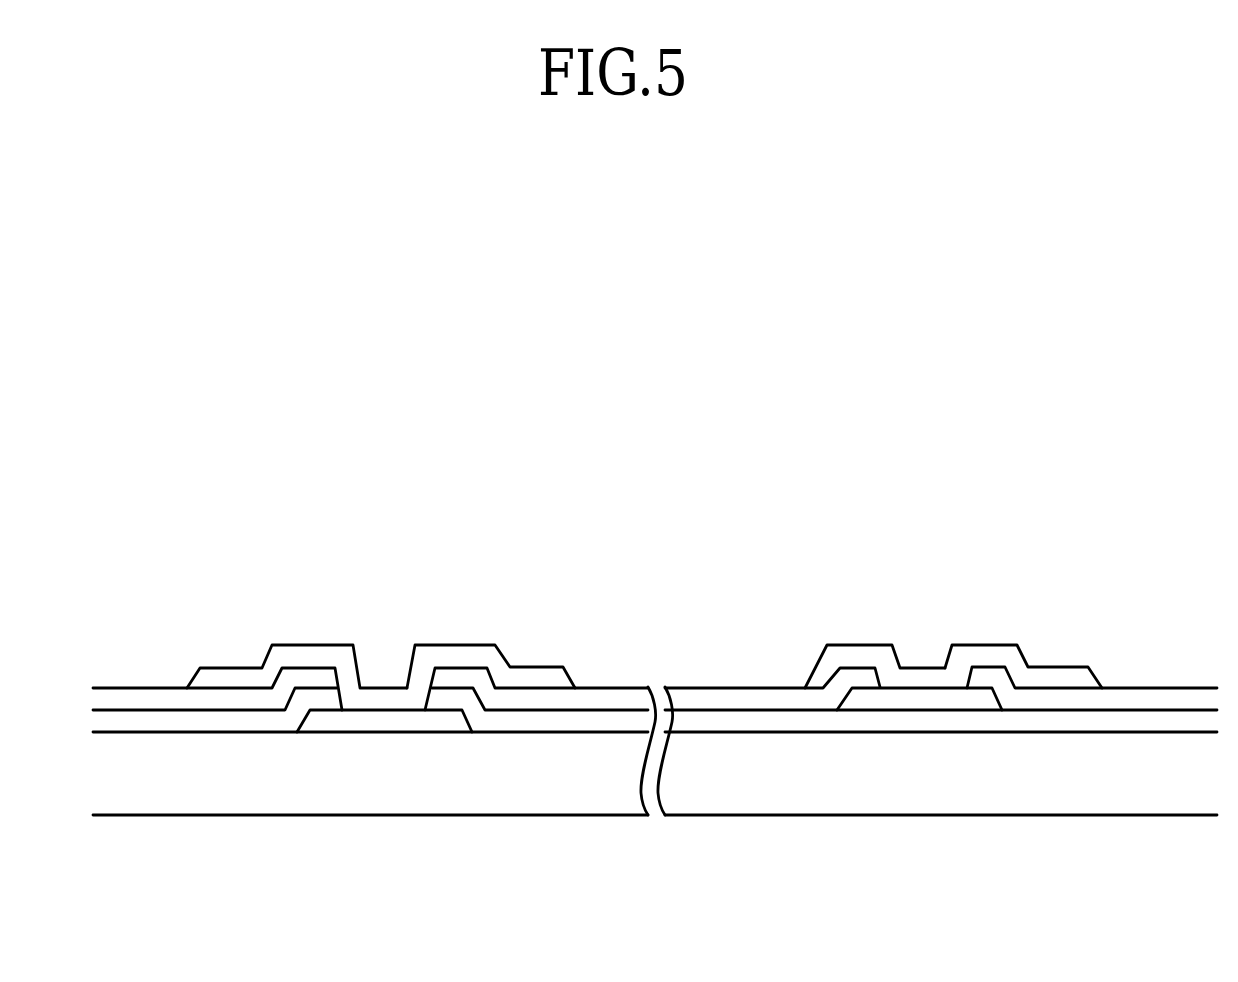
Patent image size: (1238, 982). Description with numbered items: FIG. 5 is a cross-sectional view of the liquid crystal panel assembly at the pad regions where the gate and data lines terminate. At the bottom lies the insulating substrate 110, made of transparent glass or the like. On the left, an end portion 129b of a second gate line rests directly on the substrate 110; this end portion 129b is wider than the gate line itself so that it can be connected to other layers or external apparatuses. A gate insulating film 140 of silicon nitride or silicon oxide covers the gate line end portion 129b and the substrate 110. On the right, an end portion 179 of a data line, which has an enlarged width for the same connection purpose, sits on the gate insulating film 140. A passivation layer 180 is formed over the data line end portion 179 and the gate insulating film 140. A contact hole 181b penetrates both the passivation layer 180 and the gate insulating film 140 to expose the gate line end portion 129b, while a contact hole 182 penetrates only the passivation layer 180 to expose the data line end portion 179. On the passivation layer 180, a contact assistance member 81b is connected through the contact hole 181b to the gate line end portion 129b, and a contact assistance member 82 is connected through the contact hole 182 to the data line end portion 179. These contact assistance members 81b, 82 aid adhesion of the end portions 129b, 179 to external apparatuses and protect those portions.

The insulating substrate 110 is at (297, 790).
The gate insulating film 140 is at (522, 720).
The end portion 129b is at (382, 718).
The passivation layer 180 is at (215, 702).
The contact hole 181b is at (333, 680).
The contact assistance member 81b is at (461, 652).
The end portion 179 is at (927, 702).
The contact hole 182 is at (877, 682).
The contact assistance member 82 is at (990, 645).